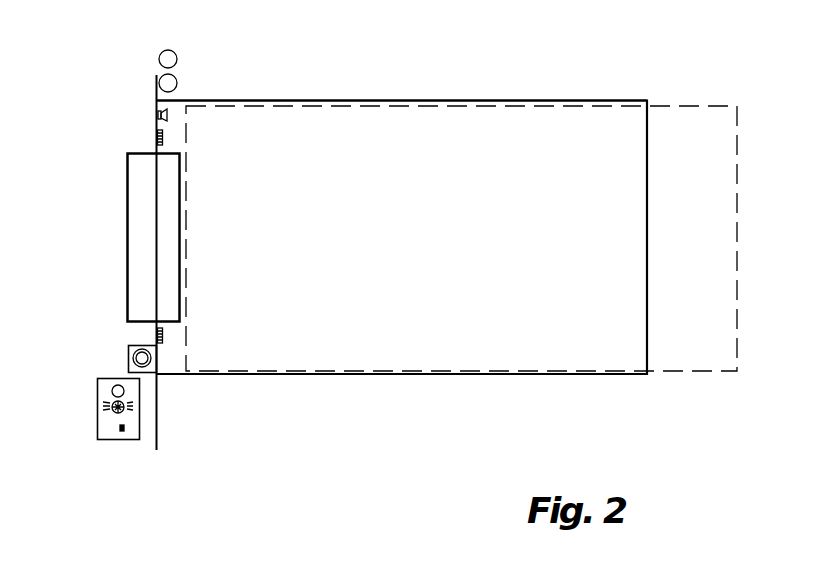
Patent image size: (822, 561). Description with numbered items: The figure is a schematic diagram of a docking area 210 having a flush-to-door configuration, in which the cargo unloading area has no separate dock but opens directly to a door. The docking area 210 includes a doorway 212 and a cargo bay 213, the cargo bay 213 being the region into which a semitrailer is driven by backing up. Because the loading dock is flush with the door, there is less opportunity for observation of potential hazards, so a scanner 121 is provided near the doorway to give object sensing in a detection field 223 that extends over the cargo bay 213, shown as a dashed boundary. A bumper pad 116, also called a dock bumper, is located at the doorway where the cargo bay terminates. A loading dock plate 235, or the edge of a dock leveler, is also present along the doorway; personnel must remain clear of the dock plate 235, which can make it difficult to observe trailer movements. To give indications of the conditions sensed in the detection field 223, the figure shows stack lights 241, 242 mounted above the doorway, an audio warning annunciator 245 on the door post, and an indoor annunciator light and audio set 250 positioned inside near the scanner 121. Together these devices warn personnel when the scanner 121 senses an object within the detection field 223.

The docking area 210 is at (309, 68).
The doorway 212 is at (155, 124).
The cargo bay 213 is at (441, 100).
The detection field 223 is at (677, 372).
The stack light 241 is at (160, 78).
The stack light 242 is at (159, 59).
The audio warning annunciator 245 is at (158, 112).
The bumper pad 116 is at (165, 129).
The loading dock plate 235 is at (127, 252).
The scanner 121 is at (152, 345).
The indoor annunciator light and audio set 250 is at (97, 382).